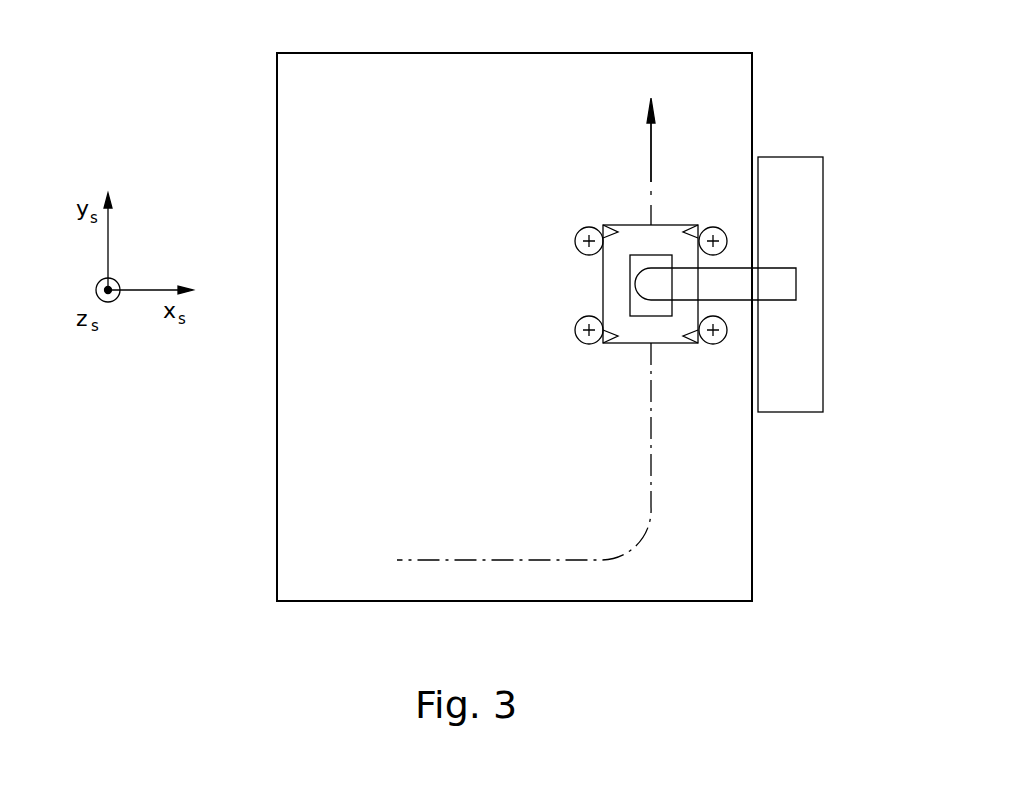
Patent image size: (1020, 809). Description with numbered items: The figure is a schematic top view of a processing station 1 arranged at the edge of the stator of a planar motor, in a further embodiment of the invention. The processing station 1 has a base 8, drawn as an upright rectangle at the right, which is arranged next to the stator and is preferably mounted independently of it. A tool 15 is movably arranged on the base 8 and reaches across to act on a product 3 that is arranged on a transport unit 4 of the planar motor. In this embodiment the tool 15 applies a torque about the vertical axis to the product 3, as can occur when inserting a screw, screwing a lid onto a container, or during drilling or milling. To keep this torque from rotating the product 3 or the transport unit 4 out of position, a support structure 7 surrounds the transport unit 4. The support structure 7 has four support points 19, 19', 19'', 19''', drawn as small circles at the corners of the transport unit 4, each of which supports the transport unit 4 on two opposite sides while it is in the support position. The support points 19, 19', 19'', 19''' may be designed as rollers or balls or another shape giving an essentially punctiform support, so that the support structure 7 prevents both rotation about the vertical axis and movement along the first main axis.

The processing station 1 is at (820, 92).
The product 3 is at (648, 302).
The transport unit 4 is at (640, 238).
The support structure 7 is at (548, 340).
The base 8 is at (789, 357).
The tool 15 is at (764, 286).
The support point 19 is at (596, 374).
The support point 19' is at (705, 370).
The support point 19'' is at (705, 194).
The support point 19''' is at (563, 208).